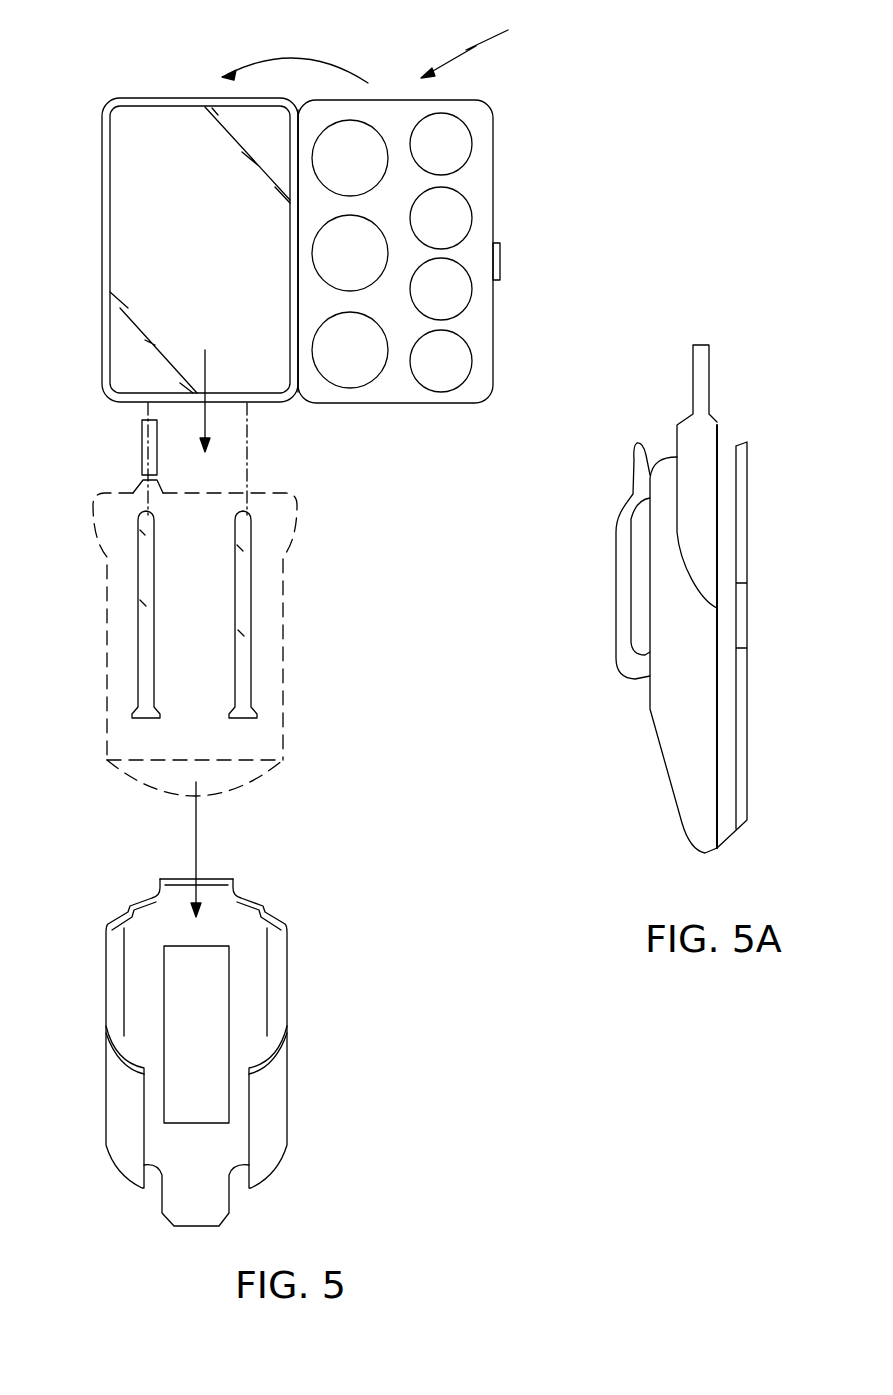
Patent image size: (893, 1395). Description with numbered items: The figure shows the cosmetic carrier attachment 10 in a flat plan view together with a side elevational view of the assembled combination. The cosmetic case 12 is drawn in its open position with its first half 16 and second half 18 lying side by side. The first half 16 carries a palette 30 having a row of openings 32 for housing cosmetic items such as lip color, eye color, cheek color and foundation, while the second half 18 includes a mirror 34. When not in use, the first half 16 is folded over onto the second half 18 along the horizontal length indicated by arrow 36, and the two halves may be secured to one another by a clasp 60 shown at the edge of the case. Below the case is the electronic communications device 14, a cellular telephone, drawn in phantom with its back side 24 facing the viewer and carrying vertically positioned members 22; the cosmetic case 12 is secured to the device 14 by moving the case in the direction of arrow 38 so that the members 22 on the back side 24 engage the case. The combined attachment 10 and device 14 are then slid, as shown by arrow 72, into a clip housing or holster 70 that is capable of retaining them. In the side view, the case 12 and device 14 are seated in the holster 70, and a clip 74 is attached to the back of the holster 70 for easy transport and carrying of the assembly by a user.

In FIG. 5, the cosmetic carrier attachment 10 is at (482, 48).
In FIG. 5, the cosmetic case 12 is at (501, 189).
In FIG. 5A, the cosmetic case 12 is at (740, 507).
In FIG. 5, the electronic communications device 14 is at (283, 684).
In FIG. 5A, the electronic communications device 14 is at (698, 448).
In FIG. 5, the first half 16 is at (470, 112).
In FIG. 5, the second half 18 is at (143, 103).
In FIG. 5, the picks 22 is at (251, 572).
In FIG. 5, the back side 24 is at (215, 627).
In FIG. 5, the palette 30 is at (402, 208).
In FIG. 5, the openings 32 is at (450, 297).
In FIG. 5, the mirror 34 is at (218, 260).
In FIG. 5, the arrow 36 is at (287, 63).
In FIG. 5, the arrow 38 is at (206, 425).
In FIG. 5, the clasp 60 is at (500, 262).
In FIG. 5, the clip housing or holster 70 is at (278, 960).
In FIG. 5A, the clip housing or holster 70 is at (675, 711).
In FIG. 5, the arrow 72 is at (199, 846).
In FIG. 5A, the clip 74 is at (618, 580).